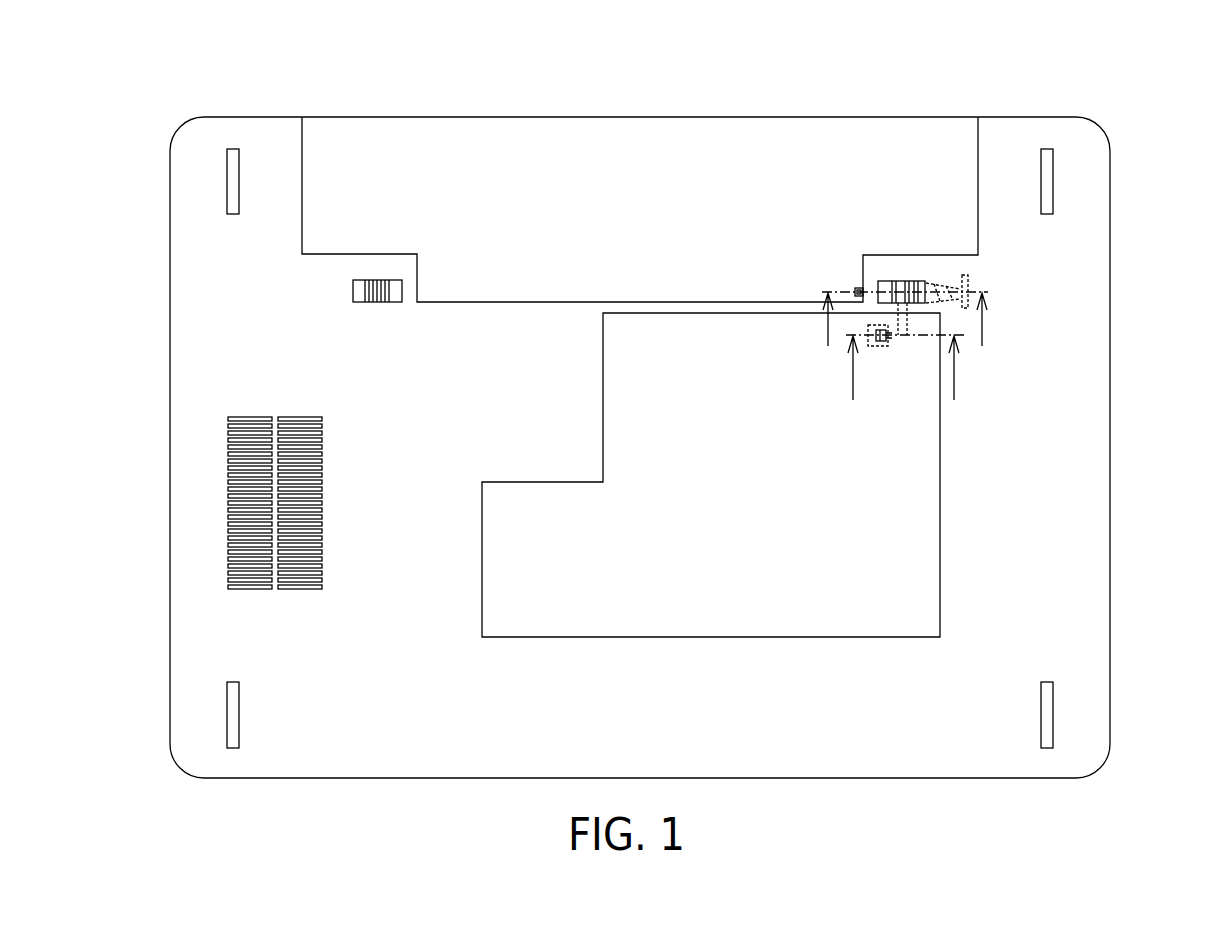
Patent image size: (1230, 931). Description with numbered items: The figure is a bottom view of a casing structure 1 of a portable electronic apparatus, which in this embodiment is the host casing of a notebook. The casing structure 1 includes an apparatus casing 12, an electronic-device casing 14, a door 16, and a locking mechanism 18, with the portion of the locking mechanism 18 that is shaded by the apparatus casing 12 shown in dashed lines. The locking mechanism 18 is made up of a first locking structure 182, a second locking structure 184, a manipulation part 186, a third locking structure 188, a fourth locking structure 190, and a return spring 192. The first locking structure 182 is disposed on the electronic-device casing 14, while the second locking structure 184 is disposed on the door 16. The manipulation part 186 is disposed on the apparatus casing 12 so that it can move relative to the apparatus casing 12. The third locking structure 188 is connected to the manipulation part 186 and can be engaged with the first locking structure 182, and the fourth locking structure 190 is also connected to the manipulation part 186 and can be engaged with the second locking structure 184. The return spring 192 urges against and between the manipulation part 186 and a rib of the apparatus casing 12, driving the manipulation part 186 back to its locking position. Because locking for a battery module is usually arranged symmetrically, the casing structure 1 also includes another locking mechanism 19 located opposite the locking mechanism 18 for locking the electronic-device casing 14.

The casing structure 1 is at (995, 82).
The apparatus casing 12 is at (1095, 592).
The electronic-device casing 14 is at (648, 148).
The door 16 is at (880, 618).
The locking mechanism 18 is at (1150, 222).
The locking mechanism 19 is at (381, 280).
The first locking structure 182 is at (858, 288).
The second locking structure 184 is at (877, 344).
The manipulation part 186 is at (920, 284).
The third locking structure 188 is at (873, 285).
The fourth locking structure 190 is at (903, 337).
The return spring 192 is at (953, 302).